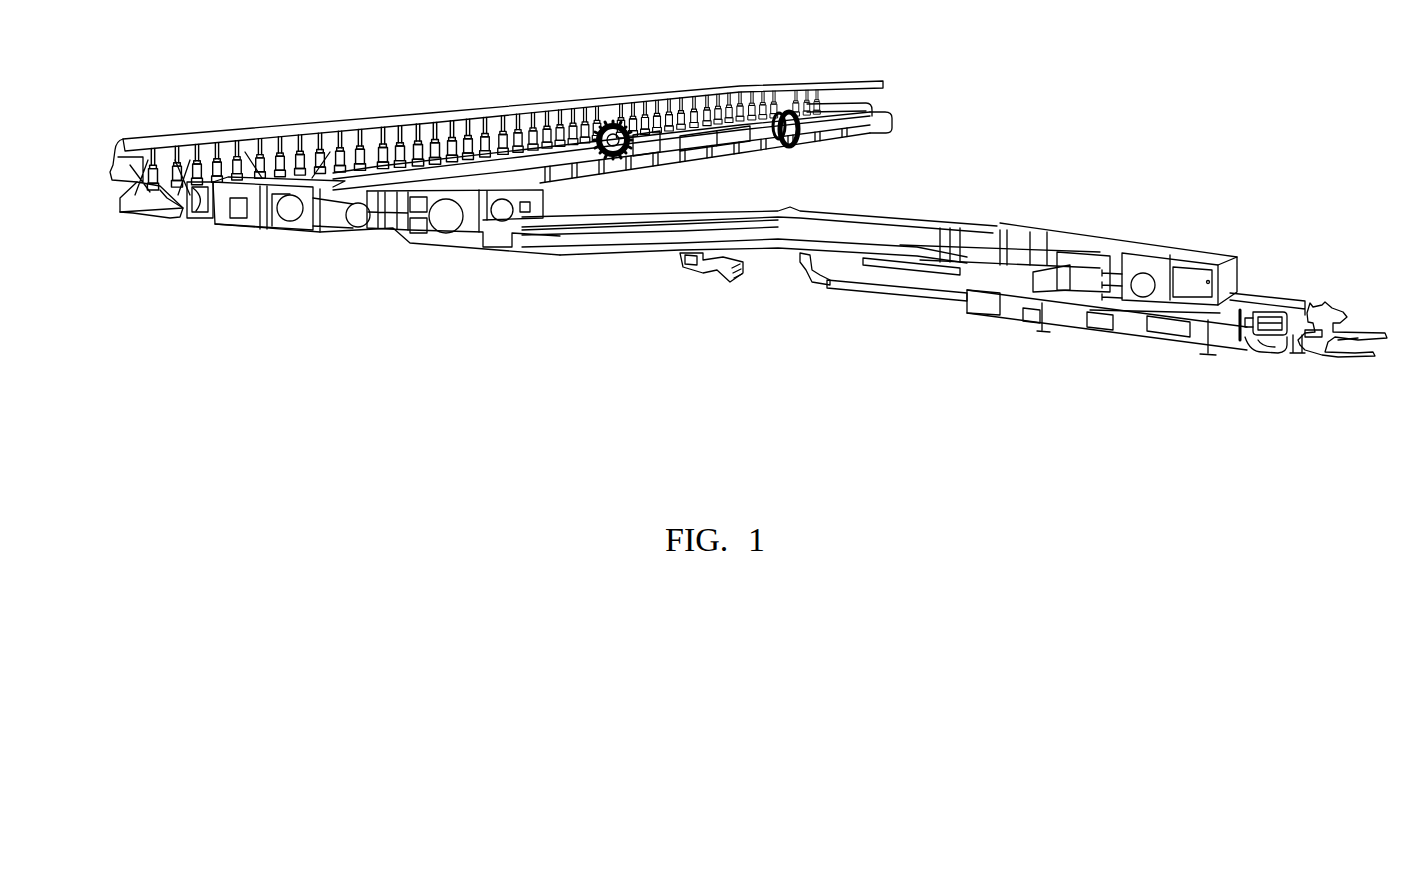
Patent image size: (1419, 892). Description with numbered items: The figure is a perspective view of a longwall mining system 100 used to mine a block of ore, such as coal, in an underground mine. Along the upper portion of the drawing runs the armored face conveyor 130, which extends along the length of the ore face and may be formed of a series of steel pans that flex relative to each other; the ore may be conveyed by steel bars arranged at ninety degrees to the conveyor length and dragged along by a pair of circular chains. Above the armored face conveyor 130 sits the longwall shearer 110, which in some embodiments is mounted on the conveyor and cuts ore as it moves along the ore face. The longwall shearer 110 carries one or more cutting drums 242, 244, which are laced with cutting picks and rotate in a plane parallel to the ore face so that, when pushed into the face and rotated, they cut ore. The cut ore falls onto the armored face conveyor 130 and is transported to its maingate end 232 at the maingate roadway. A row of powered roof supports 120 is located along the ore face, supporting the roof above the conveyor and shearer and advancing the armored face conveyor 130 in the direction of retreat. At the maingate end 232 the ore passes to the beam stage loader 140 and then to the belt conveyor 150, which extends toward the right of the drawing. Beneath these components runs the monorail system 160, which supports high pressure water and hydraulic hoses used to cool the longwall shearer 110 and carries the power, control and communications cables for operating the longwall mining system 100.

The longwall mining system 100 is at (1035, 61).
The longwall shearer 110 is at (700, 137).
The powered roof supports 120 is at (497, 87).
The armored face conveyor 130 is at (563, 162).
The beam stage loader 140 is at (297, 180).
The belt conveyor 150 is at (1330, 308).
The monorail system 160 is at (1073, 343).
The maingate end 232 is at (210, 181).
The cutting drum 242 is at (610, 120).
The cutting drum 244 is at (793, 97).